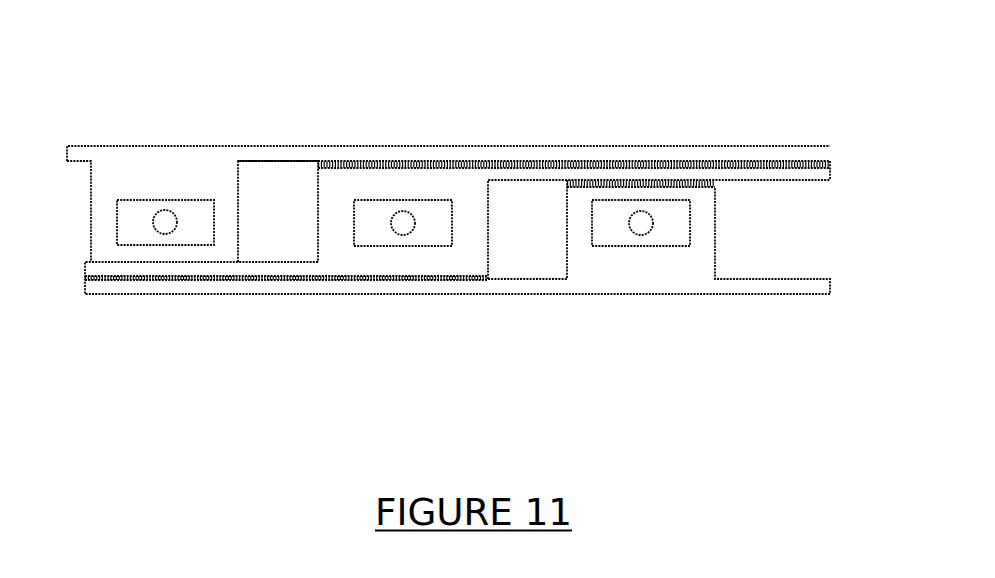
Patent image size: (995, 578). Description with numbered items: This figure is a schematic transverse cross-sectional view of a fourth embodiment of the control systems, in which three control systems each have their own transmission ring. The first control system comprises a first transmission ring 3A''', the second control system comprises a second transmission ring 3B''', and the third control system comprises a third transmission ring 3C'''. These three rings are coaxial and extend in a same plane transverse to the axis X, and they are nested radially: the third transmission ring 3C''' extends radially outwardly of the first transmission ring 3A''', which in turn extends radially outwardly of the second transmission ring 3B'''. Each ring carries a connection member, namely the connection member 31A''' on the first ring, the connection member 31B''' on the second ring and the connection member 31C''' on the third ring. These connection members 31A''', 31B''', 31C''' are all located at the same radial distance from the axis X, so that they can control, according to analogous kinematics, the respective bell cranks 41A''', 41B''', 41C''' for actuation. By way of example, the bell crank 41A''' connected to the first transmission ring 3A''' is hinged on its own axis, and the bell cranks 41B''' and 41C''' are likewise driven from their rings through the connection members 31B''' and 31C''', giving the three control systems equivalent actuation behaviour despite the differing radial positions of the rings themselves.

The first transmission ring 3A''' is at (534, 112).
The second transmission ring 3B''' is at (457, 309).
The third transmission ring 3C''' is at (448, 138).
The connection member 31A''' is at (403, 176).
The connection member 31B''' is at (641, 292).
The connection member 31C''' is at (154, 161).
The bell crank 41A''' is at (425, 297).
The bell crank 41B''' is at (625, 151).
The bell crank 41C''' is at (185, 297).